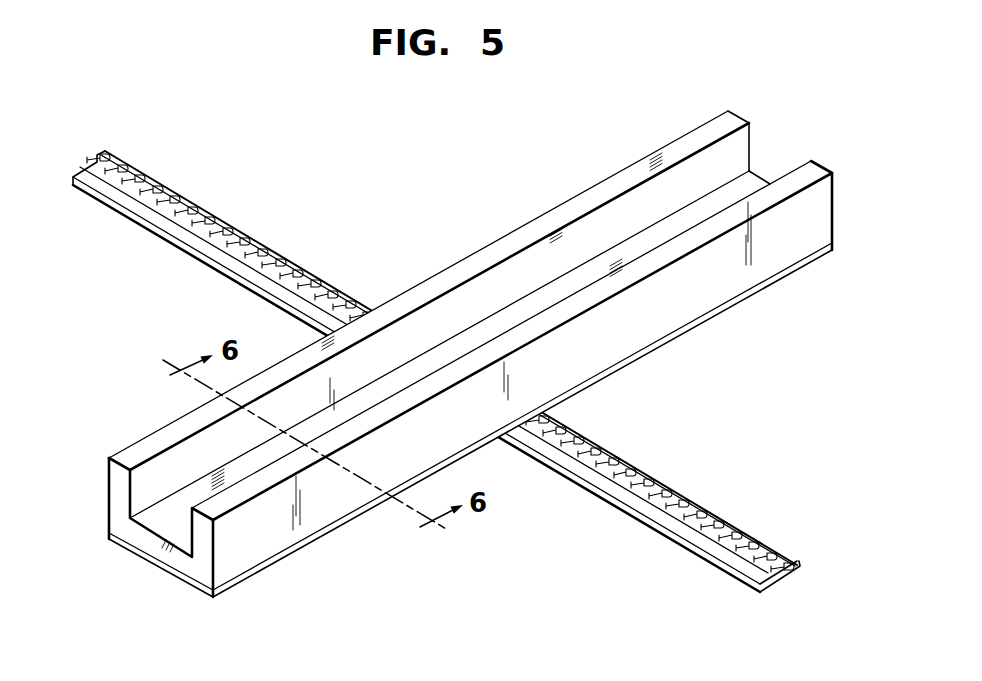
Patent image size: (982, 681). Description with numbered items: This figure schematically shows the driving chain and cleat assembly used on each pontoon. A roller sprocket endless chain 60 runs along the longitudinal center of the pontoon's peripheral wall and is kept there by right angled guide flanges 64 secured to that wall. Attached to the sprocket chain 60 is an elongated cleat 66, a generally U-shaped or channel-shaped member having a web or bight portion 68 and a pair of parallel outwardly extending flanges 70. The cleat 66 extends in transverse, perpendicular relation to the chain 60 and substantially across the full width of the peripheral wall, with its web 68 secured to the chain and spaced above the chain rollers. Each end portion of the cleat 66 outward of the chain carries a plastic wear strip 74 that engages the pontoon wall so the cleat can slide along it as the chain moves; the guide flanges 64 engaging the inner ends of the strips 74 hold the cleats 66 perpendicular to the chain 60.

The roller sprocket endless chain 60 is at (439, 408).
The right angled guide flanges 64 is at (763, 538).
The cleat 66 is at (470, 369).
The web or bight portion 68 is at (172, 531).
The parallel outwardly extending flanges 70 is at (793, 178).
The plastic wear strip 74 is at (714, 312).